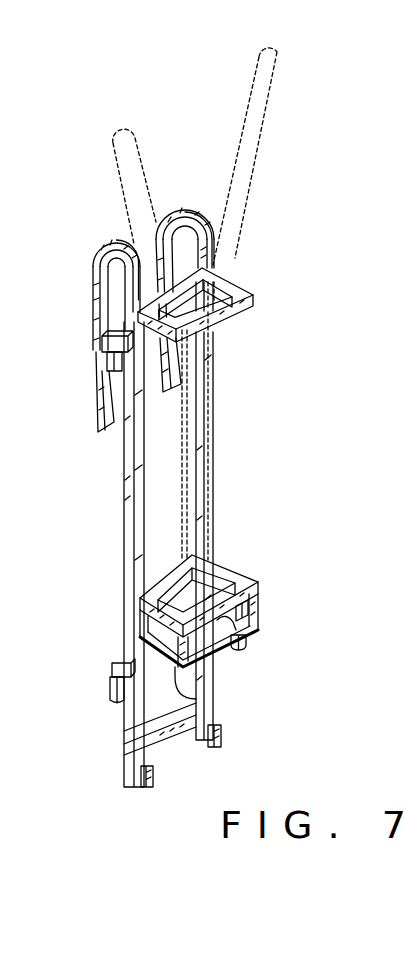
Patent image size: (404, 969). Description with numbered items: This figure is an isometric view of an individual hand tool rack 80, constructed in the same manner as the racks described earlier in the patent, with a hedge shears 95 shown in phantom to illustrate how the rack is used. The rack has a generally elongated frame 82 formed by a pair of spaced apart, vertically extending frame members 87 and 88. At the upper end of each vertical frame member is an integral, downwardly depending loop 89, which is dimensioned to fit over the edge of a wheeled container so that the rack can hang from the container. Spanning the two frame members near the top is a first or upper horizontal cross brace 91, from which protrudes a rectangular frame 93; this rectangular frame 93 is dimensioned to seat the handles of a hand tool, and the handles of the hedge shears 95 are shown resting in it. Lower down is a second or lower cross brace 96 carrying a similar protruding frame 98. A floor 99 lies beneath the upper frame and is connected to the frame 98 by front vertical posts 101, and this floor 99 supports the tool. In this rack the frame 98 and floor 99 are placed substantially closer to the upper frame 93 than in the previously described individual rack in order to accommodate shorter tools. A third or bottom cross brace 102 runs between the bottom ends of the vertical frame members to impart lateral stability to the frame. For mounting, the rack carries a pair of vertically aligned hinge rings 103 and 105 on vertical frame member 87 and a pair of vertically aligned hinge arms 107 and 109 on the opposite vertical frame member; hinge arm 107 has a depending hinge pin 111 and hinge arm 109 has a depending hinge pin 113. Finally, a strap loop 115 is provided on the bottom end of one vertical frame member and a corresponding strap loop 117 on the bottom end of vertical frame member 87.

The hand tool rack 80 is at (269, 291).
The frame 82 is at (215, 406).
The vertical frame member 87 is at (214, 483).
The vertical frame member 88 is at (125, 488).
The loop 89 is at (180, 210).
The upper horizontal cross brace 91 is at (208, 270).
The rectangular frame 93 is at (102, 413).
The hedge shears 95 is at (247, 179).
The lower cross brace 96 is at (163, 576).
The frame 98 is at (240, 565).
The floor 99 is at (258, 615).
The front vertical posts 101 is at (250, 607).
The bottom cross brace 102 is at (200, 747).
The hinge ring 103 is at (228, 302).
The hinge ring 105 is at (234, 650).
The hinge arm 107 is at (100, 340).
The hinge arm 109 is at (116, 664).
The hinge pin 111 is at (108, 362).
The hinge pin 113 is at (112, 693).
The strap loop 115 is at (153, 783).
The strap loop 117 is at (222, 732).